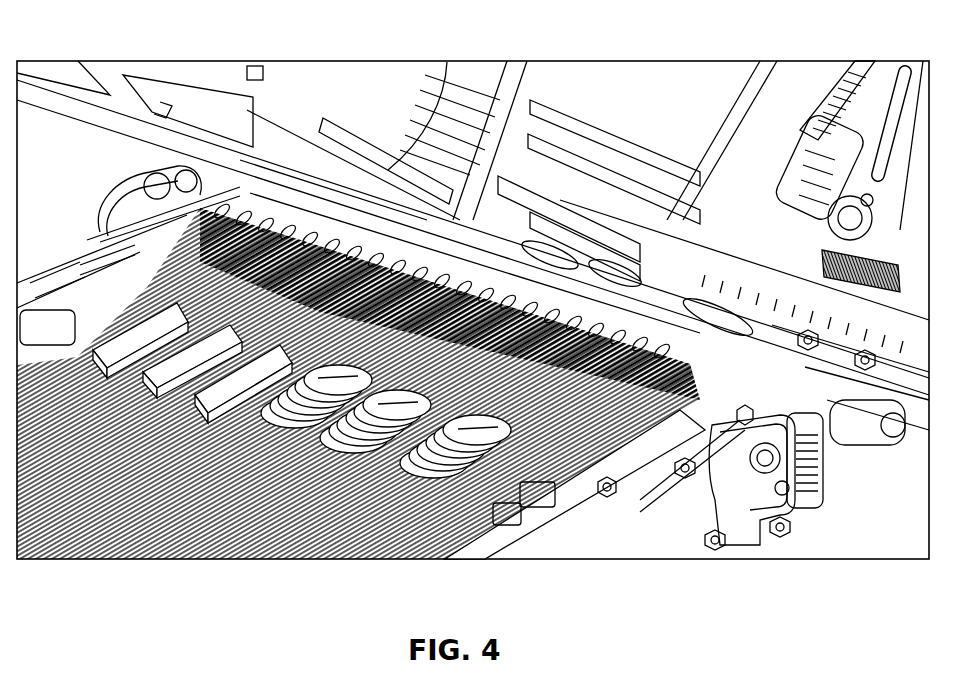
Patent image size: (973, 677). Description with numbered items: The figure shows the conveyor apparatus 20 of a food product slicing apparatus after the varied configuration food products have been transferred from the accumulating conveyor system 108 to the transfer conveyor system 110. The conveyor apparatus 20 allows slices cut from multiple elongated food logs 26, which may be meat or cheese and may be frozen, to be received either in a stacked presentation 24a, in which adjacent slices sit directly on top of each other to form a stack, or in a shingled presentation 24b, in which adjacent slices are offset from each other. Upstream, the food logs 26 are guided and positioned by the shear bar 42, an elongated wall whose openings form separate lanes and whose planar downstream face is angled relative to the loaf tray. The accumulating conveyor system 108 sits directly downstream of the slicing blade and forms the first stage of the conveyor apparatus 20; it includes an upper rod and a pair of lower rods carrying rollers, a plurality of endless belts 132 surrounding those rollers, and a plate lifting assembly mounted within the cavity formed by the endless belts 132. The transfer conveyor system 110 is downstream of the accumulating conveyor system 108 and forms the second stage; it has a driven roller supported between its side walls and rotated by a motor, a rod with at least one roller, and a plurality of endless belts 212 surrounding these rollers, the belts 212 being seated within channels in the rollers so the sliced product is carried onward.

The conveyor apparatus 20 is at (82, 42).
The stacked presentation 24a is at (158, 272).
The shingled presentation 24b is at (342, 392).
The food logs 26 is at (447, 62).
The shear bar 42 is at (800, 467).
The accumulating conveyor system 108 is at (673, 490).
The transfer conveyor system 110 is at (502, 513).
The endless belts 132 is at (607, 487).
The endless belts 212 is at (170, 497).